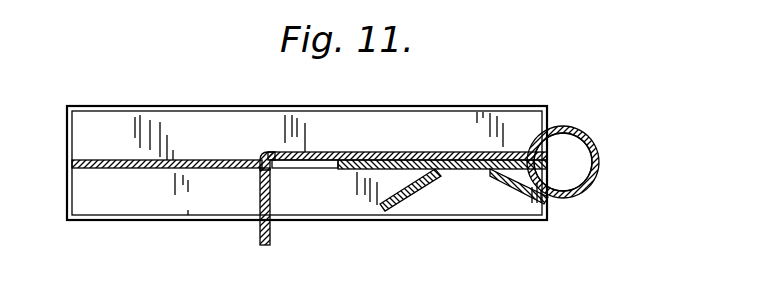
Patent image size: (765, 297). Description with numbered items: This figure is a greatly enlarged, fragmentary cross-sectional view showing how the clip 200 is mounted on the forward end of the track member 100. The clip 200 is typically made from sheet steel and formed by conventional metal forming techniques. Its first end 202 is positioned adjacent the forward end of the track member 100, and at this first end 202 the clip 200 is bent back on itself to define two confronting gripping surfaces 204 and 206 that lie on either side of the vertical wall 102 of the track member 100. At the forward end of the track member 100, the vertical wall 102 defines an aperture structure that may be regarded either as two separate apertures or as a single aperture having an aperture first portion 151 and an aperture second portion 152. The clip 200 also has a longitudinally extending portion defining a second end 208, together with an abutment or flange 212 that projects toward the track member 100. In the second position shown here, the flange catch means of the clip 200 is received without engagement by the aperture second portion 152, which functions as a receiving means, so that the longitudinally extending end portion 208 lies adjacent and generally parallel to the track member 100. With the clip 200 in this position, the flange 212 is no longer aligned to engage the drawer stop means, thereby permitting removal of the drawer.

The track member 100 is at (363, 103).
The vertical wall 102 is at (138, 158).
The aperture first portion 151 is at (314, 166).
The aperture second portion 152 is at (261, 158).
The gripping surface 204 is at (457, 152).
The second end 208 is at (304, 152).
The flange 212 is at (258, 196).
The gripping surface 206 is at (476, 172).
The clip 200 is at (594, 127).
The first end 202 is at (600, 156).